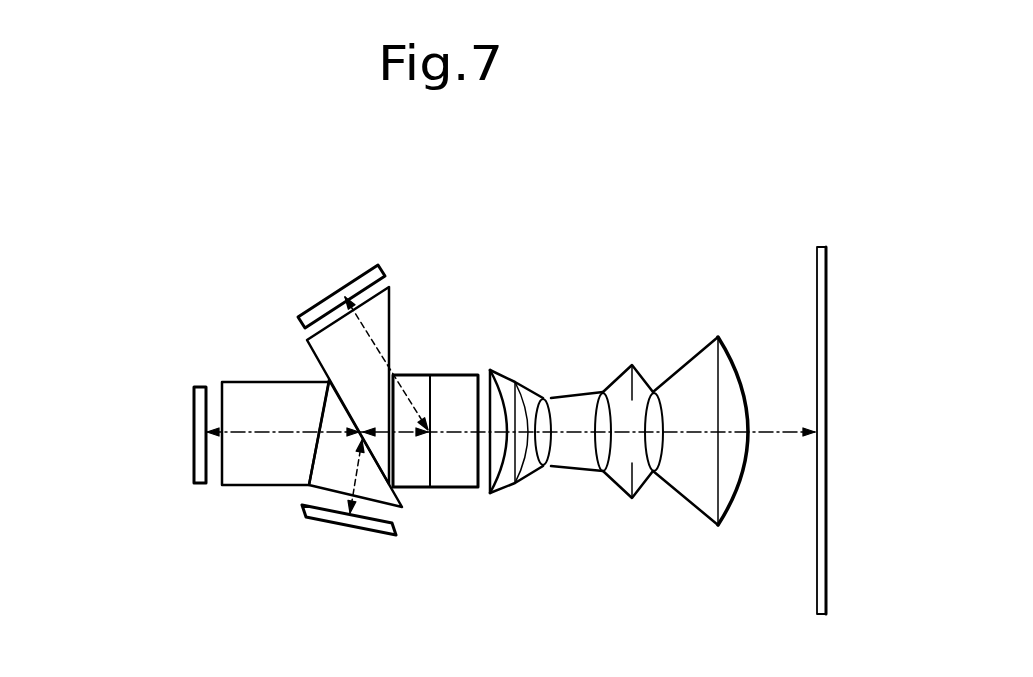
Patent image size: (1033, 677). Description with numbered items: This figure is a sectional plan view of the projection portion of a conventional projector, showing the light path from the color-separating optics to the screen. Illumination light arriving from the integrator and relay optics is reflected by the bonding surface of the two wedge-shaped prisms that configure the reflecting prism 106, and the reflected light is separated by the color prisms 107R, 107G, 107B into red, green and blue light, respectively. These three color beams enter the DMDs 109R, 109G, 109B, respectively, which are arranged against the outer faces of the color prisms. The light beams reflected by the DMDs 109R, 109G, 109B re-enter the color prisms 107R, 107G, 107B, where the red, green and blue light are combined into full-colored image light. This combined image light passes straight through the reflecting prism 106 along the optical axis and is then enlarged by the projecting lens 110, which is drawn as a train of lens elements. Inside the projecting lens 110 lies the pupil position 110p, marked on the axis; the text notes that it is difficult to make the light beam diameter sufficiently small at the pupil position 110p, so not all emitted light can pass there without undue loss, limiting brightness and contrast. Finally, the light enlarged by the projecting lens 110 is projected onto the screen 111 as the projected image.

The reflecting prism 106 is at (454, 375).
The color prism 107B is at (393, 302).
The color prism 107G is at (235, 487).
The color prism 107R is at (315, 493).
The DMD 109B is at (365, 265).
The DMD 109G is at (195, 400).
The DMD 109R is at (383, 535).
The projecting lens 110 is at (627, 447).
The pupil position 110p is at (630, 473).
The screen 111 is at (820, 247).